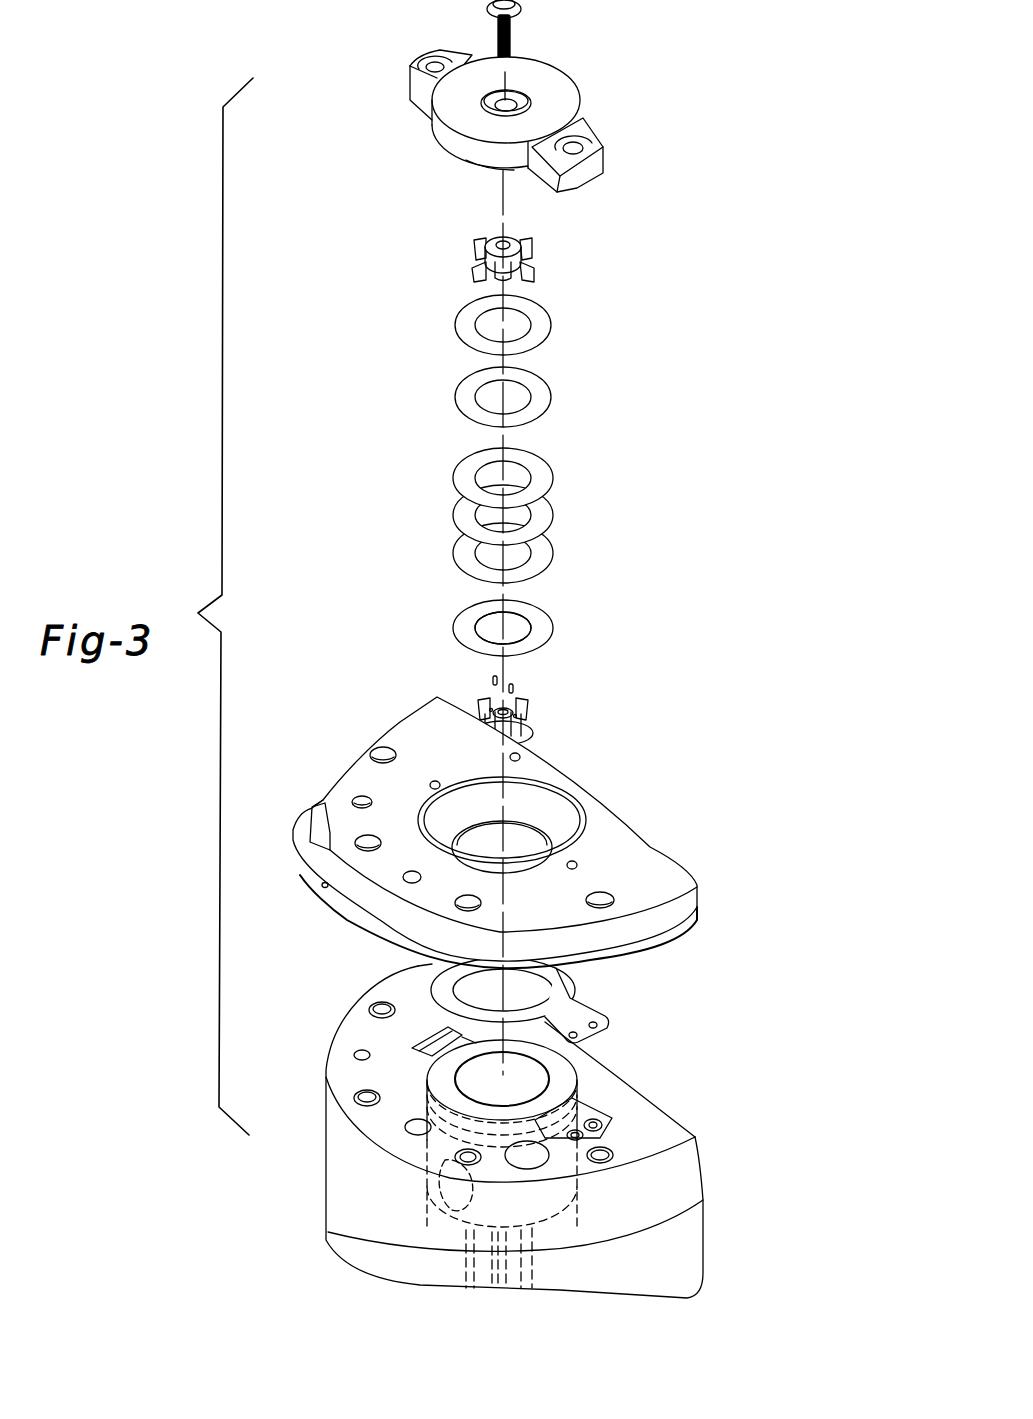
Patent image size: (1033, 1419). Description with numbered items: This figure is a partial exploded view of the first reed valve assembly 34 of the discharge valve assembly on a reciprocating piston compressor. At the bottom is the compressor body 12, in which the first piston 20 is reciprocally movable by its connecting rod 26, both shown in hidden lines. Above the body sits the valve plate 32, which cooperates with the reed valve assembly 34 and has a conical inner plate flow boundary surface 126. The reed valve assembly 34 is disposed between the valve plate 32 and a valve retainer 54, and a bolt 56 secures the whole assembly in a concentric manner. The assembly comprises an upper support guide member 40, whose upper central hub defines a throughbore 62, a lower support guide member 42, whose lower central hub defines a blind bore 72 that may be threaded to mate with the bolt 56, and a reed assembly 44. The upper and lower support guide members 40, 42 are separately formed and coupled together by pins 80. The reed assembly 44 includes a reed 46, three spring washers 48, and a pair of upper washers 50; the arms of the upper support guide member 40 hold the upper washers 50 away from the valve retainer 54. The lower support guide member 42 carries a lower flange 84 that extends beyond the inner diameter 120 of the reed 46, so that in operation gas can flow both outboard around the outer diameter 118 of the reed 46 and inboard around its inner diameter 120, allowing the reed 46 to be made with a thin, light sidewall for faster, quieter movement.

The compressor body 12 is at (554, 1143).
The first piston 20 is at (445, 1227).
The connecting rod 26 is at (458, 1280).
The valve plate 32 is at (510, 870).
The first reed valve assembly 34 is at (776, 266).
The upper support guide member 40 is at (521, 248).
The lower support guide member 42 is at (519, 731).
The reed assembly 44 is at (484, 515).
The reed 46 is at (540, 612).
The spring washers 48 is at (538, 557).
The upper washers 50 is at (542, 396).
The valve retainer 54 is at (562, 90).
The bolt 56 is at (512, 35).
The throughbore 62 is at (497, 243).
The blind bore 72 is at (495, 743).
The pins 80 is at (490, 679).
The lower flange 84 is at (480, 740).
The outer diameter of the reed 118 is at (502, 612).
The inner diameter of the reed 120 is at (490, 623).
The inner plate flow boundary surface 126 is at (548, 812).